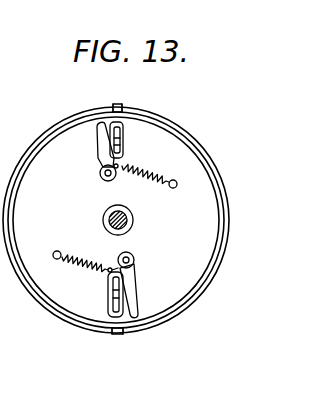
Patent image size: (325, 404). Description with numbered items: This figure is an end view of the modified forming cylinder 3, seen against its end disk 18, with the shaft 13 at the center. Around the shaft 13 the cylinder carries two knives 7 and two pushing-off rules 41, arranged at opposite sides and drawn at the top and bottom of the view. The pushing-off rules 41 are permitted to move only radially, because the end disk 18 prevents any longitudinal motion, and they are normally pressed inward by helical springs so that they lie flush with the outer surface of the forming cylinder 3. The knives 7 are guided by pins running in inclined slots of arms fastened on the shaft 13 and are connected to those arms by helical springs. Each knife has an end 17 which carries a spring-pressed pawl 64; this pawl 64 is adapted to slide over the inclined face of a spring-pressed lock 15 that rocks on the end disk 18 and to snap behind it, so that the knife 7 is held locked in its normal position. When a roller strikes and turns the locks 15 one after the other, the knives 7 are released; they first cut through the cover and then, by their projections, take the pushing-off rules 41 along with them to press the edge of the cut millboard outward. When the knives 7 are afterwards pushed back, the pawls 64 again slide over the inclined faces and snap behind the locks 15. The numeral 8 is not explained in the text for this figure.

The forming cylinder 3 is at (53, 126).
The end disk 18 is at (190, 165).
The pushing-off rule 41 is at (118, 104).
The tab side 8 is at (113, 106).
The knife 7 is at (123, 106).
The spring-pressed pawl 64 is at (121, 158).
The spring-pressed lock 15 is at (100, 140).
The knife end 17 is at (103, 143).
The shaft 13 is at (103, 221).